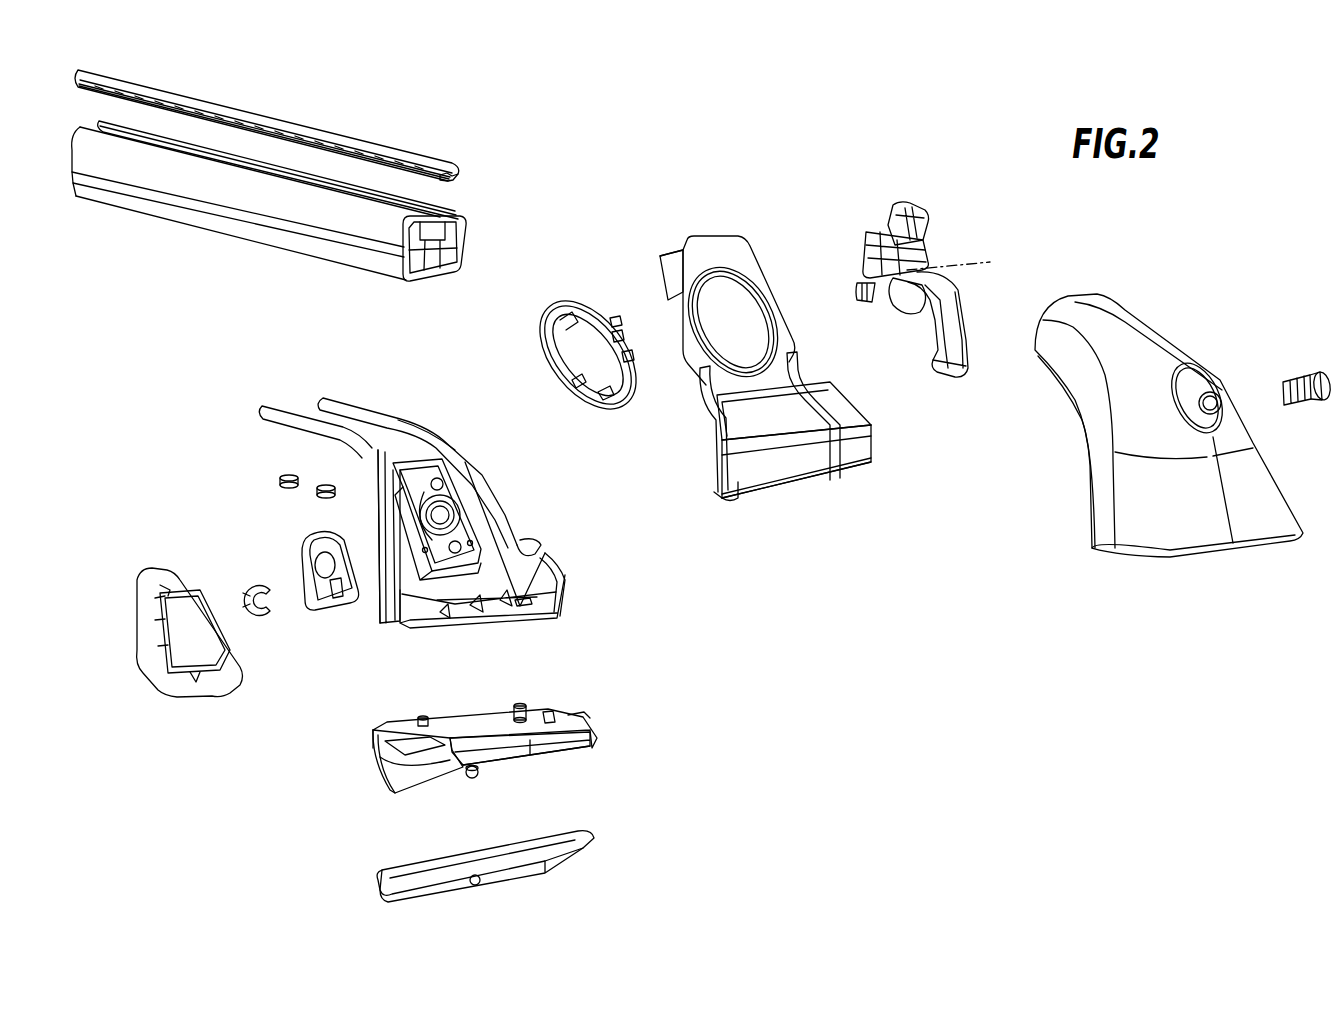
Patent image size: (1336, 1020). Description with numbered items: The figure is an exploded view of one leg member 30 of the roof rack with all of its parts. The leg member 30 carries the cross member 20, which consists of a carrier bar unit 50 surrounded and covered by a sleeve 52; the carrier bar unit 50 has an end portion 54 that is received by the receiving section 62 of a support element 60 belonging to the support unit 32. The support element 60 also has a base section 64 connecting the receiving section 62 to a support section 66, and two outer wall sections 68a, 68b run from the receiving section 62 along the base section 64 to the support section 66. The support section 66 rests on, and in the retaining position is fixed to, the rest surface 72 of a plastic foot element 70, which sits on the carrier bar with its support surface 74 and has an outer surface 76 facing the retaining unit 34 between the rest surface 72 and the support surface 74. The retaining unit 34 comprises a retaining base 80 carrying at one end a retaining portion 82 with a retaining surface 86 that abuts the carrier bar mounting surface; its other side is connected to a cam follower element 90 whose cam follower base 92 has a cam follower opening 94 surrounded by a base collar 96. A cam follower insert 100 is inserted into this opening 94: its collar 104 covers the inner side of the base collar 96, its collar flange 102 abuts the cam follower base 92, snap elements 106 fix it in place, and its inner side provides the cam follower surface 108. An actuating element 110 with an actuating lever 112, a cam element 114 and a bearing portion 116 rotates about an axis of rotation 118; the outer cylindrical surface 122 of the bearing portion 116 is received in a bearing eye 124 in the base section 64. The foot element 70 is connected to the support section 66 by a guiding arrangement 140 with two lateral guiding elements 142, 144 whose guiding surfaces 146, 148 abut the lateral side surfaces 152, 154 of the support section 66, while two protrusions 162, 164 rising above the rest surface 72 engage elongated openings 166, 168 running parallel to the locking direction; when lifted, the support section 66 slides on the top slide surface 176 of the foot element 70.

The cross member 20 is at (317, 201).
The carrier bar unit 50 is at (521, 240).
The sleeve 52 is at (330, 306).
The end portion 54 is at (276, 292).
The cam follower insert 100 is at (542, 357).
The collar flange 102 is at (555, 372).
The collar 104 is at (565, 332).
The snap elements 106 is at (576, 436).
The cam follower surface 108 is at (620, 325).
The cam follower element 90 is at (796, 364).
The cam follower base 92 is at (840, 343).
The cam follower opening 94 is at (802, 253).
The base collar 96 is at (770, 222).
The retaining base 80 is at (903, 445).
The retaining portion 82 is at (813, 527).
The retaining surface 86 is at (718, 487).
The leg member 30 is at (848, 124).
The retaining unit 34 is at (886, 407).
The actuating element 110 is at (927, 273).
The actuating lever 112 is at (990, 322).
The cam element 114 is at (880, 278).
The bearing portion 116 is at (860, 292).
The axis of rotation 118 is at (1020, 277).
The outer cylindrical surface 122 is at (900, 356).
The support element 60 is at (449, 509).
The receiving section 62 is at (398, 475).
The outer wall section 68a is at (375, 453).
The outer wall section 68b is at (522, 440).
The bearing eye 124 is at (534, 478).
The base section 64 is at (575, 547).
The support section 66 is at (563, 648).
The lateral side surface 152 is at (376, 646).
The lateral side surface 154 is at (610, 614).
The elongated opening 166 is at (493, 659).
The elongated opening 168 is at (596, 580).
The support unit 32 is at (358, 505).
The foot element 70 is at (499, 744).
The rest surface 72 is at (487, 727).
The support surface 74 is at (521, 800).
The outer surface 76 is at (480, 808).
The guiding arrangement 140 is at (399, 707).
The lateral guiding element 142 is at (400, 733).
The lateral guiding element 144 is at (623, 701).
The guiding surface 146 is at (370, 810).
The guiding surface 148 is at (566, 793).
The protrusion 162 is at (418, 721).
The protrusion 164 is at (563, 682).
The top slide surface 176 is at (433, 820).